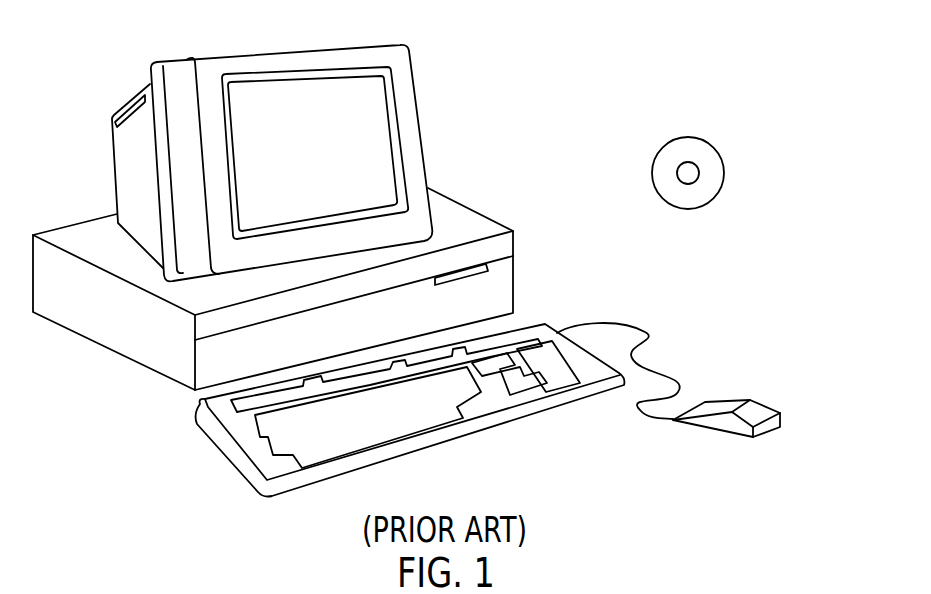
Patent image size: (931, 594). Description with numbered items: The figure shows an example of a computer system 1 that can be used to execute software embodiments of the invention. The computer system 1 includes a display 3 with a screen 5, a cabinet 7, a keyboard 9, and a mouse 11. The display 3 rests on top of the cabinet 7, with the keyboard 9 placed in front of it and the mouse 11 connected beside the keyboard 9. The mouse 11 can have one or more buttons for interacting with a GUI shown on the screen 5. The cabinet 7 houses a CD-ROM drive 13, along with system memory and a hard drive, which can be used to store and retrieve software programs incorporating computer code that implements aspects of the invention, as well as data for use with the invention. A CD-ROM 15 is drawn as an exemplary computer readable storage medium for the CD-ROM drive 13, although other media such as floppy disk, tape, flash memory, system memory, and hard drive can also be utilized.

The computer system 1 is at (640, 44).
The display 3 is at (428, 147).
The screen 5 is at (368, 105).
The cabinet 7 is at (147, 367).
The keyboard 9 is at (443, 447).
The mouse 11 is at (762, 402).
The CD-ROM drive 13 is at (488, 265).
The CD-ROM 15 is at (711, 148).